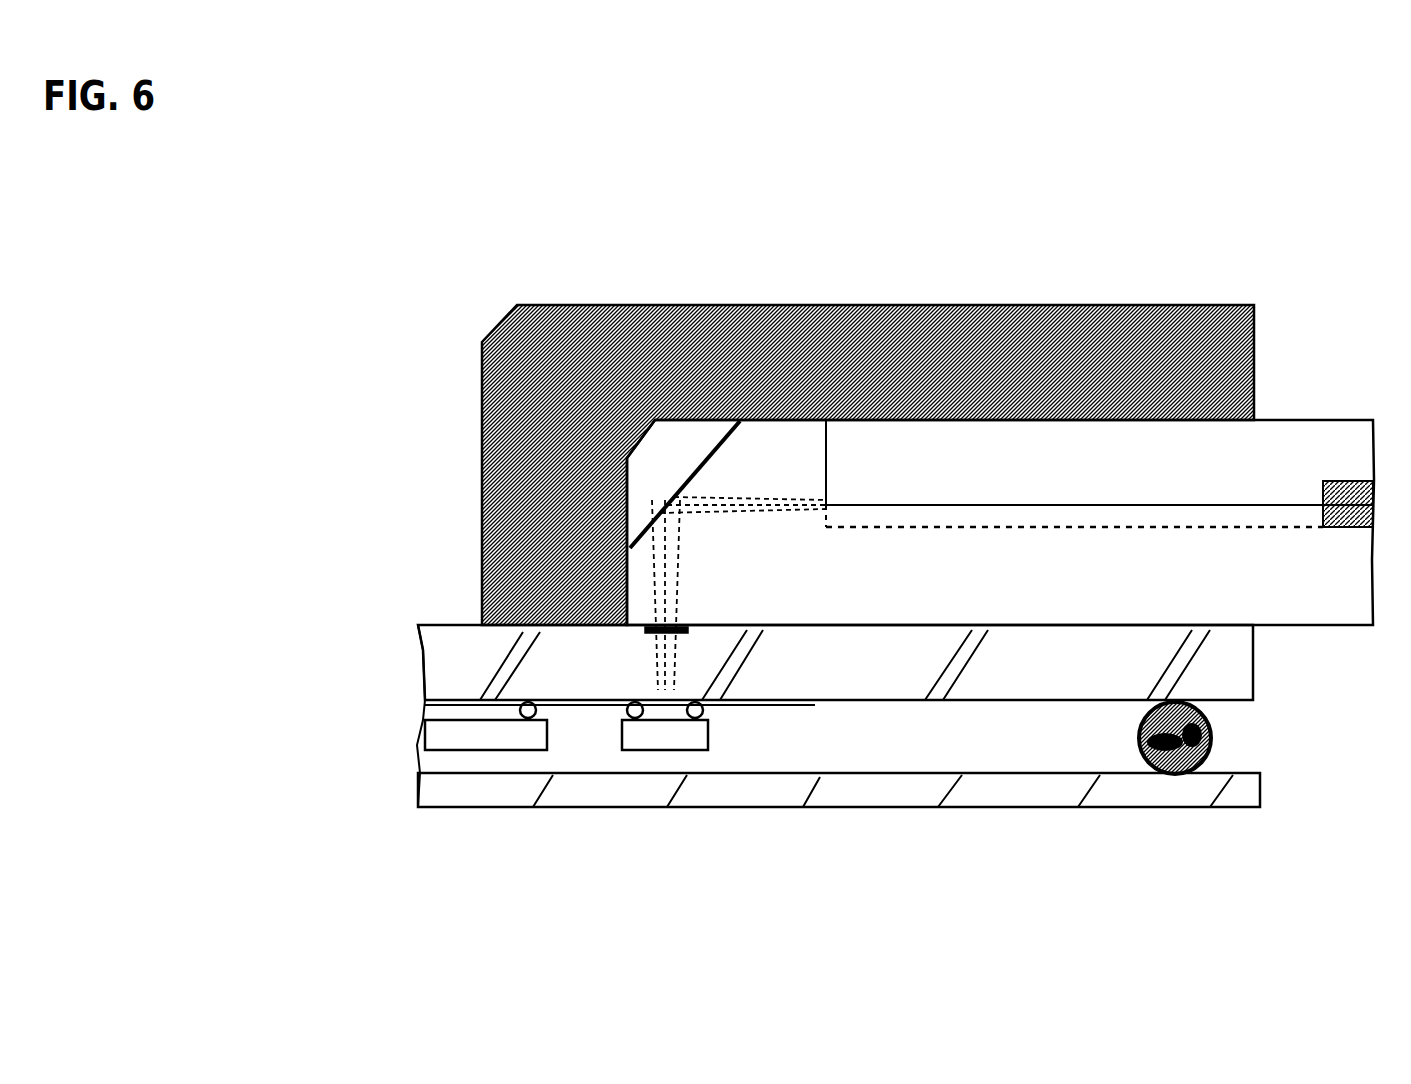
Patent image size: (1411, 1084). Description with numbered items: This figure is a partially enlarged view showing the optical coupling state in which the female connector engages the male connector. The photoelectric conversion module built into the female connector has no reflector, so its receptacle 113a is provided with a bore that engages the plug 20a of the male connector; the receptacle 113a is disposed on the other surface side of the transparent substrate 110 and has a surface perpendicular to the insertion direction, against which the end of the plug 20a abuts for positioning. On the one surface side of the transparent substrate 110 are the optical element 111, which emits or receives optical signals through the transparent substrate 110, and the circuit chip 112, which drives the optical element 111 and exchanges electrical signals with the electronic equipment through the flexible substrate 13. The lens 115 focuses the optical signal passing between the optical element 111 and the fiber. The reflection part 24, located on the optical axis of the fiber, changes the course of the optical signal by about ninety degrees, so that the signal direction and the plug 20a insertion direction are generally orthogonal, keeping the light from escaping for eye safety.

The reflection part 24 is at (710, 447).
The receptacle 113a is at (1149, 305).
The plug 20a is at (1338, 420).
The lens 115 is at (662, 627).
The transparent substrate 110 is at (893, 688).
The optical element 111 is at (657, 745).
The circuit chip 112 is at (473, 745).
The flexible substrate 13 is at (1262, 793).